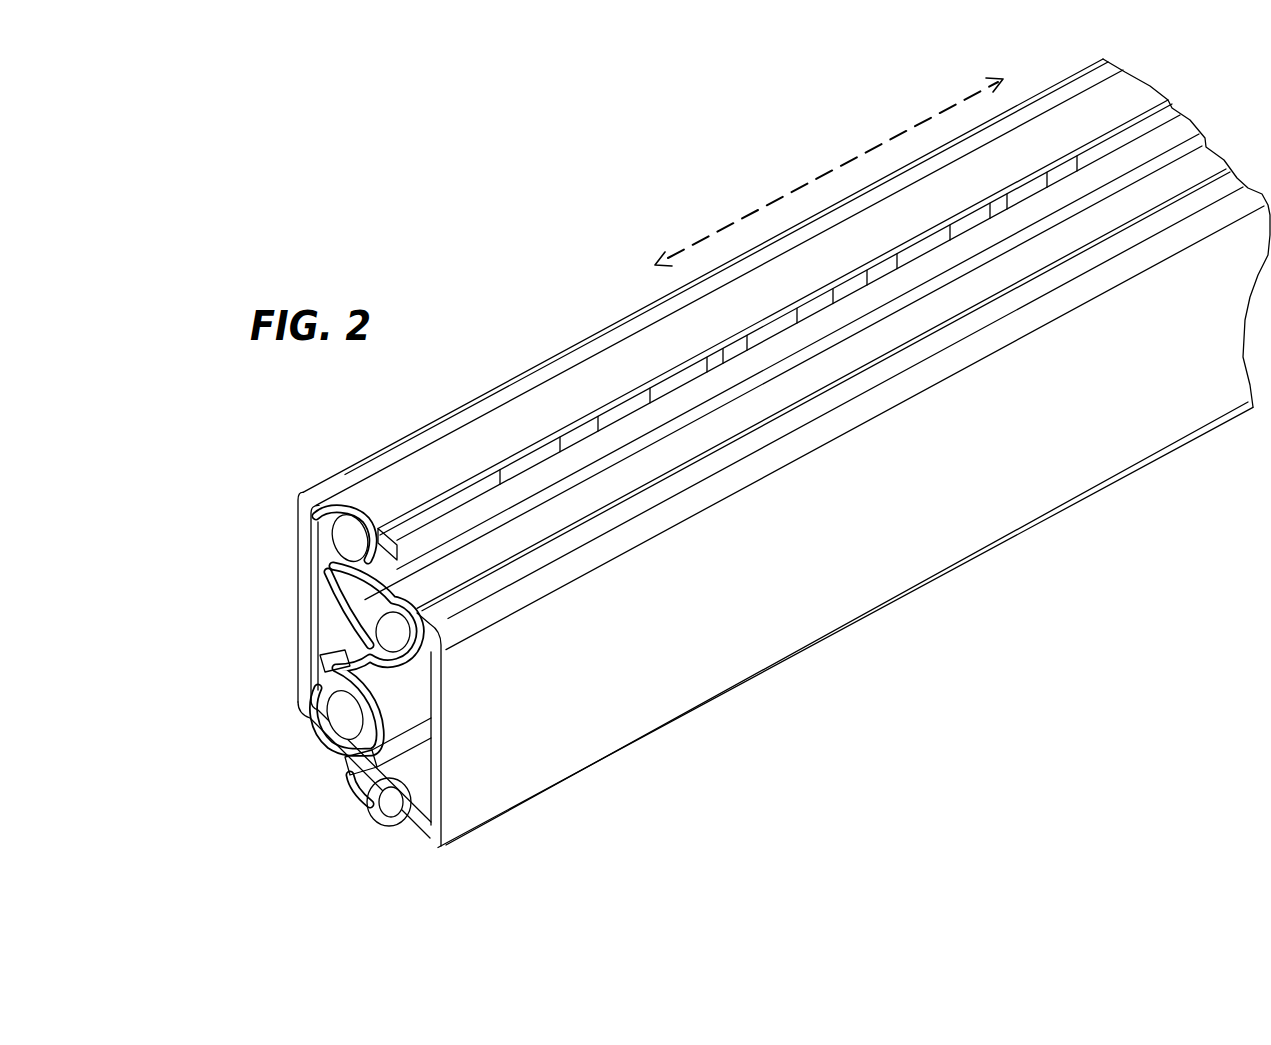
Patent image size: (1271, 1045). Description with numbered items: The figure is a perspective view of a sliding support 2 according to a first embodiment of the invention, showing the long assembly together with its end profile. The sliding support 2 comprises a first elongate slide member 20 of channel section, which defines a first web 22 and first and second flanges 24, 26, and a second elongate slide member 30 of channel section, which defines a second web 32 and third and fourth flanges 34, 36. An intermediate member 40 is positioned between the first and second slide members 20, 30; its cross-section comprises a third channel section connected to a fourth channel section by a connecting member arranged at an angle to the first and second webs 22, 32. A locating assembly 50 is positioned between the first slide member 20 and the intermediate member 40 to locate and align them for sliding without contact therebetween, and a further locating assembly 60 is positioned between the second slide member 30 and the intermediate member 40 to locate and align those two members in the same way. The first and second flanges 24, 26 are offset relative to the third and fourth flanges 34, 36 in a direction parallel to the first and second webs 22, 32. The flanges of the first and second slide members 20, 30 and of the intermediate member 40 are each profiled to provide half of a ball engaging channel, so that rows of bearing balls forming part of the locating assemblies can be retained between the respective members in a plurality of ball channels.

The sliding support 2 is at (940, 603).
The first elongate slide member 20 is at (548, 745).
The first web 22 is at (655, 695).
The first flange 24 is at (405, 585).
The second flange 26 is at (388, 832).
The second elongate slide member 30 is at (268, 588).
The second web 32 is at (295, 655).
The third flange 34 is at (315, 714).
The fourth flange 36 is at (357, 498).
The intermediate member 40 is at (595, 447).
The locating assembly 50 is at (398, 650).
The further locating assembly 60 is at (340, 540).